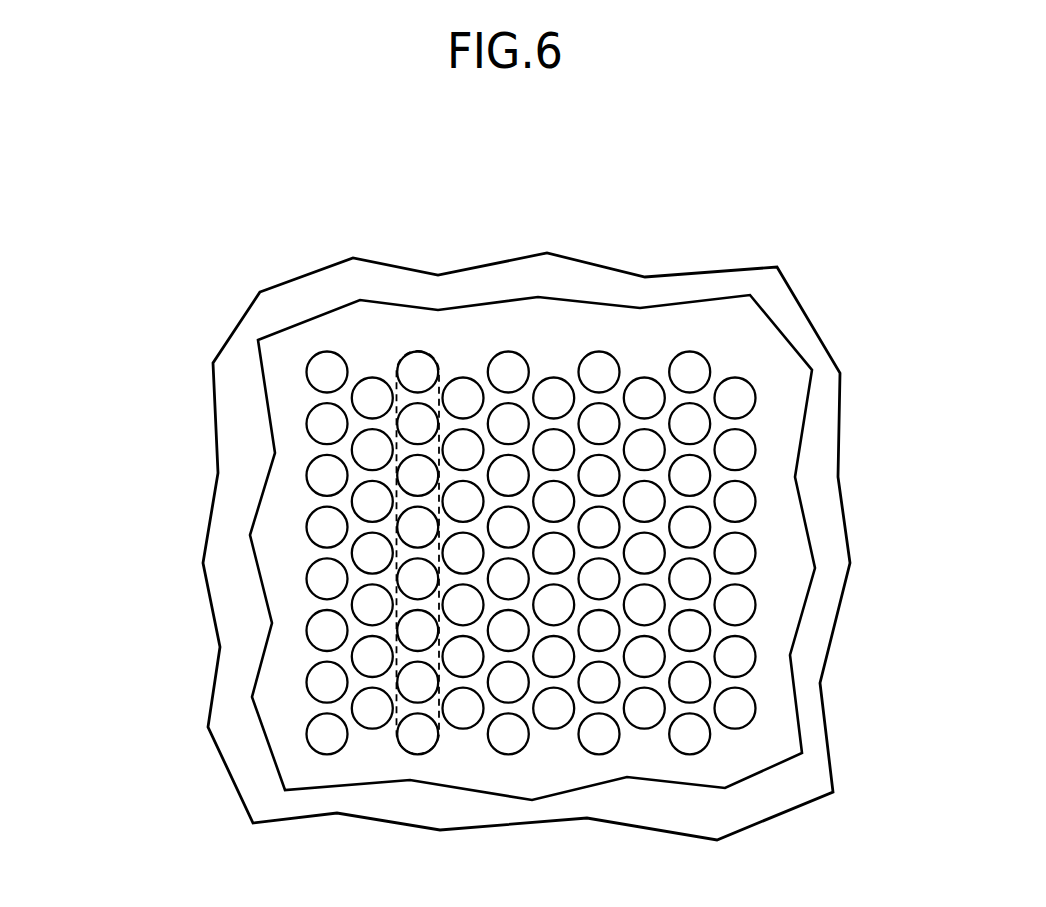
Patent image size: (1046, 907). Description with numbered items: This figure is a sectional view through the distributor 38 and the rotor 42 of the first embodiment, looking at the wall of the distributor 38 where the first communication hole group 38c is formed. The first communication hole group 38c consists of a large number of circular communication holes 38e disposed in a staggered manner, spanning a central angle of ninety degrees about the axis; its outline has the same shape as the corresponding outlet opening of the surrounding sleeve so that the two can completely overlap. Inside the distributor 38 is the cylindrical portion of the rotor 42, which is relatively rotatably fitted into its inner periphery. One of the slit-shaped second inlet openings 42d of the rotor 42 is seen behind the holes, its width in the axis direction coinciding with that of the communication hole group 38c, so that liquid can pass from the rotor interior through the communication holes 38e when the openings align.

The distributor 38 is at (568, 297).
The first communication hole group 38c is at (298, 518).
The circular communication holes 38e is at (690, 574).
The rotor 42 is at (690, 268).
The second inlet openings 42d is at (410, 387).